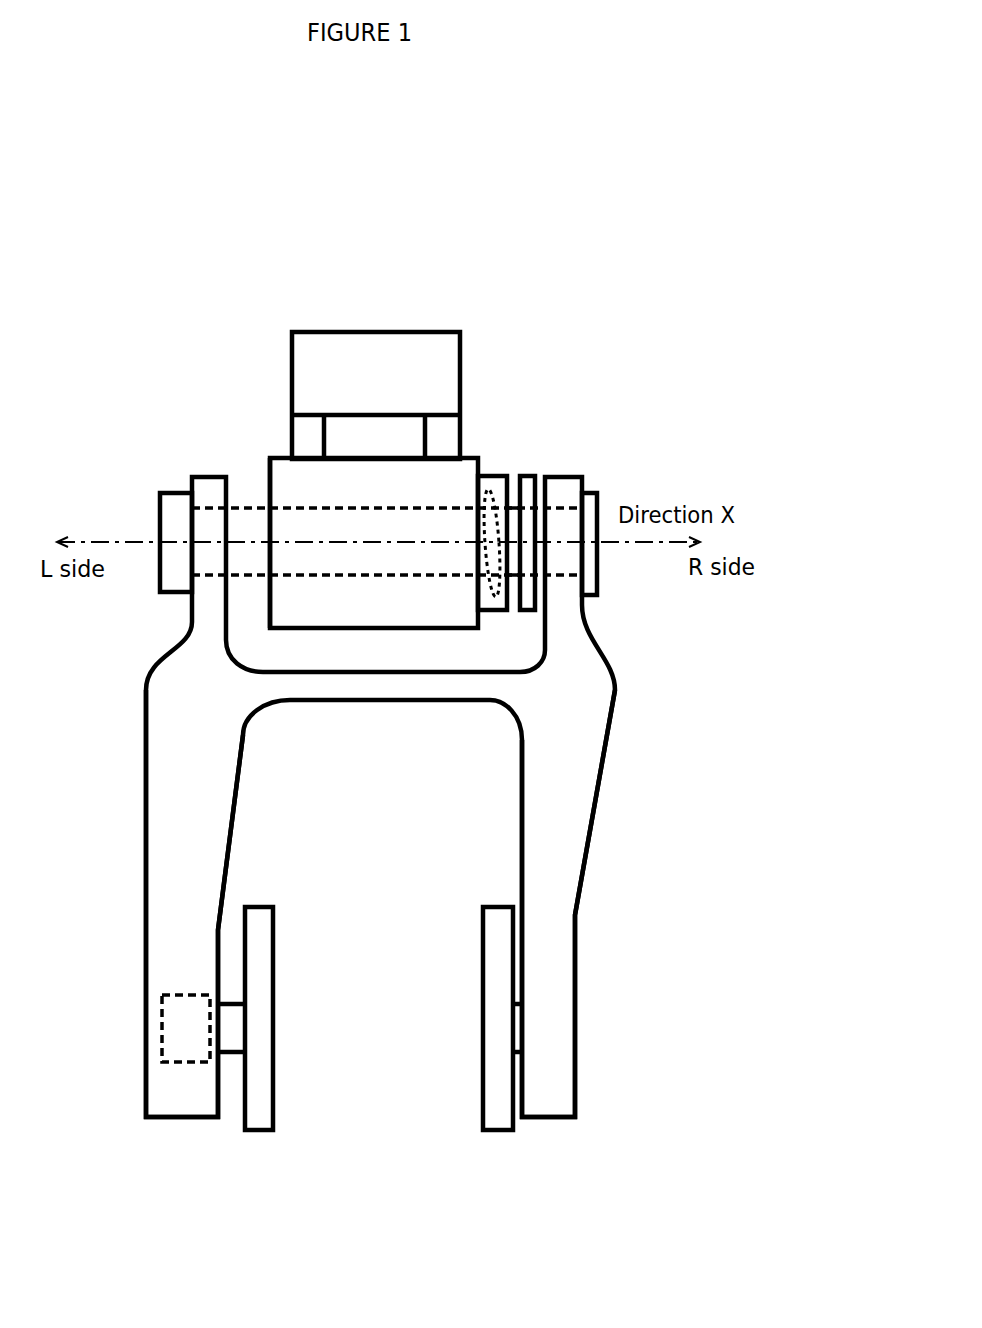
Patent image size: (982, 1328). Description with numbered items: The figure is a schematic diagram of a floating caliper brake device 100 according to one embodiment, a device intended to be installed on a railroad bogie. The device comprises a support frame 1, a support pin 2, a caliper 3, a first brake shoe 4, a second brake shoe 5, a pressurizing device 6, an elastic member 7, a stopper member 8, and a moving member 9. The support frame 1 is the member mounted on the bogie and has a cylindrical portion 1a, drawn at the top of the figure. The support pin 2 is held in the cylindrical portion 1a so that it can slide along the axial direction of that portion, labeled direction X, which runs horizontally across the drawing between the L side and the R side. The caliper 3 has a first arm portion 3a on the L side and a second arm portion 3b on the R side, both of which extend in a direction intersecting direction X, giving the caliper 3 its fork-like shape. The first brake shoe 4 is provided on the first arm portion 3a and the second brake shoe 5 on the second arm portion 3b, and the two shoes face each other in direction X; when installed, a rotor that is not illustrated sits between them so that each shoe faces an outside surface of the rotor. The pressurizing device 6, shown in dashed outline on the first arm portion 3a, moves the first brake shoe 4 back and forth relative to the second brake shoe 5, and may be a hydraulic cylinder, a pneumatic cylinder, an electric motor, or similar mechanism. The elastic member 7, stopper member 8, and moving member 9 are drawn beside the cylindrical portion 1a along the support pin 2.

The floating caliper brake device 100 is at (145, 268).
The support frame 1 is at (493, 383).
The cylindrical portion 1a is at (268, 474).
The support pin 2 is at (247, 503).
The caliper 3 is at (93, 712).
The first arm portion 3a is at (145, 927).
The second arm portion 3b is at (580, 897).
The first brake shoe 4 is at (262, 1132).
The second brake shoe 5 is at (500, 1132).
The pressurizing device 6 is at (190, 1062).
The elastic member 7 is at (510, 497).
The stopper member 8 is at (494, 474).
The moving member 9 is at (532, 474).